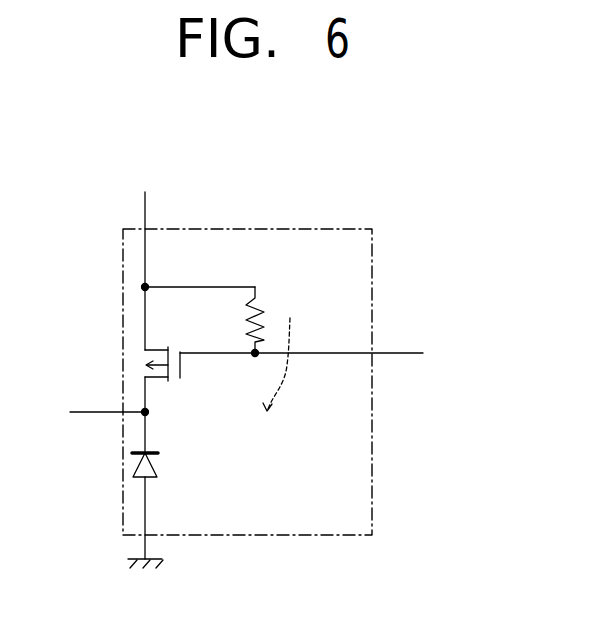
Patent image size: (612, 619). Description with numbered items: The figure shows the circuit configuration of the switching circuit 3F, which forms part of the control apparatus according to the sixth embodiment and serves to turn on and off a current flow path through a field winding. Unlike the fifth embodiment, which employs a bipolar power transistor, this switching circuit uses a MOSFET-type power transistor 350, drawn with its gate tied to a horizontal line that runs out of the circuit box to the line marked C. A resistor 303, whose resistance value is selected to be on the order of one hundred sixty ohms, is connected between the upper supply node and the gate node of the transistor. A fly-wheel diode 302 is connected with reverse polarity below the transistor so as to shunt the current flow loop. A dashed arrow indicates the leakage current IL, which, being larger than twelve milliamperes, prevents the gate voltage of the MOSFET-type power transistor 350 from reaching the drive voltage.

The switching circuit 3F is at (252, 222).
The resistor 303 is at (266, 323).
The MOSFET-type power transistor 350 is at (177, 388).
The fly-wheel diode 302 is at (165, 470).
The leakage current IL is at (291, 361).
The control line C is at (393, 354).